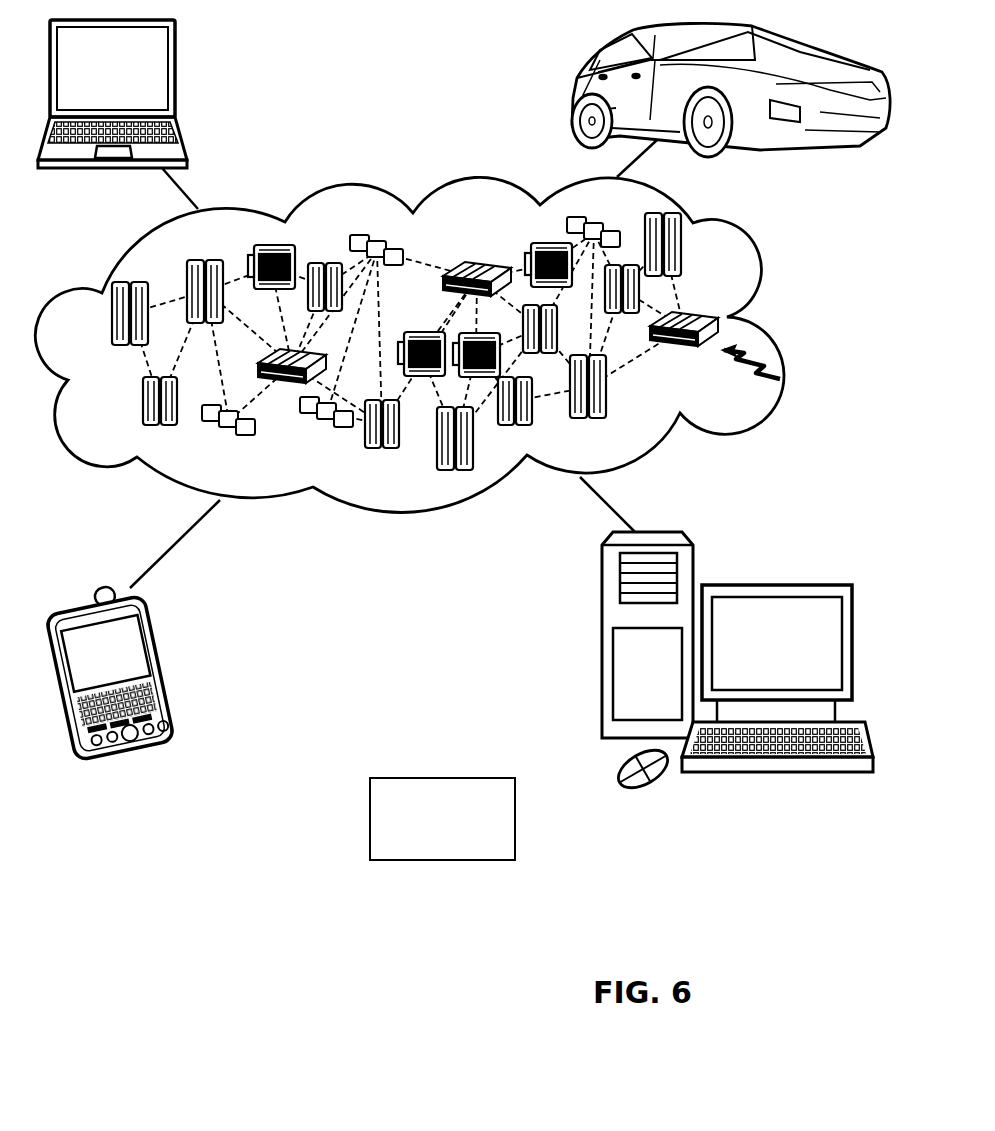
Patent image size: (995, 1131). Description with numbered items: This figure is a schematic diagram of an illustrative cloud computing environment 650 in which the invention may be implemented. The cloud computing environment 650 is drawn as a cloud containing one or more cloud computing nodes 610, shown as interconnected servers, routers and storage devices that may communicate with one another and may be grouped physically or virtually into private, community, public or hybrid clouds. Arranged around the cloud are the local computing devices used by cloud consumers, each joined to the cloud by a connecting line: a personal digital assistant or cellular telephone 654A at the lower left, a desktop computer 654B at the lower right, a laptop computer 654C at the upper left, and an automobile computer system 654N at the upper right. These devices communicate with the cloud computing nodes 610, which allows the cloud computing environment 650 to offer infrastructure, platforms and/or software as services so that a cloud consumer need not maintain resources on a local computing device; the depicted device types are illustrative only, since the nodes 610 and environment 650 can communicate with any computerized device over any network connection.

The cloud computing environment 650 is at (775, 318).
The cloud computing nodes 610 is at (784, 378).
The personal digital assistant or cellular telephone 654A is at (166, 664).
The desktop computer 654B is at (773, 585).
The laptop computer 654C is at (175, 77).
The automobile computer system 654N is at (575, 88).